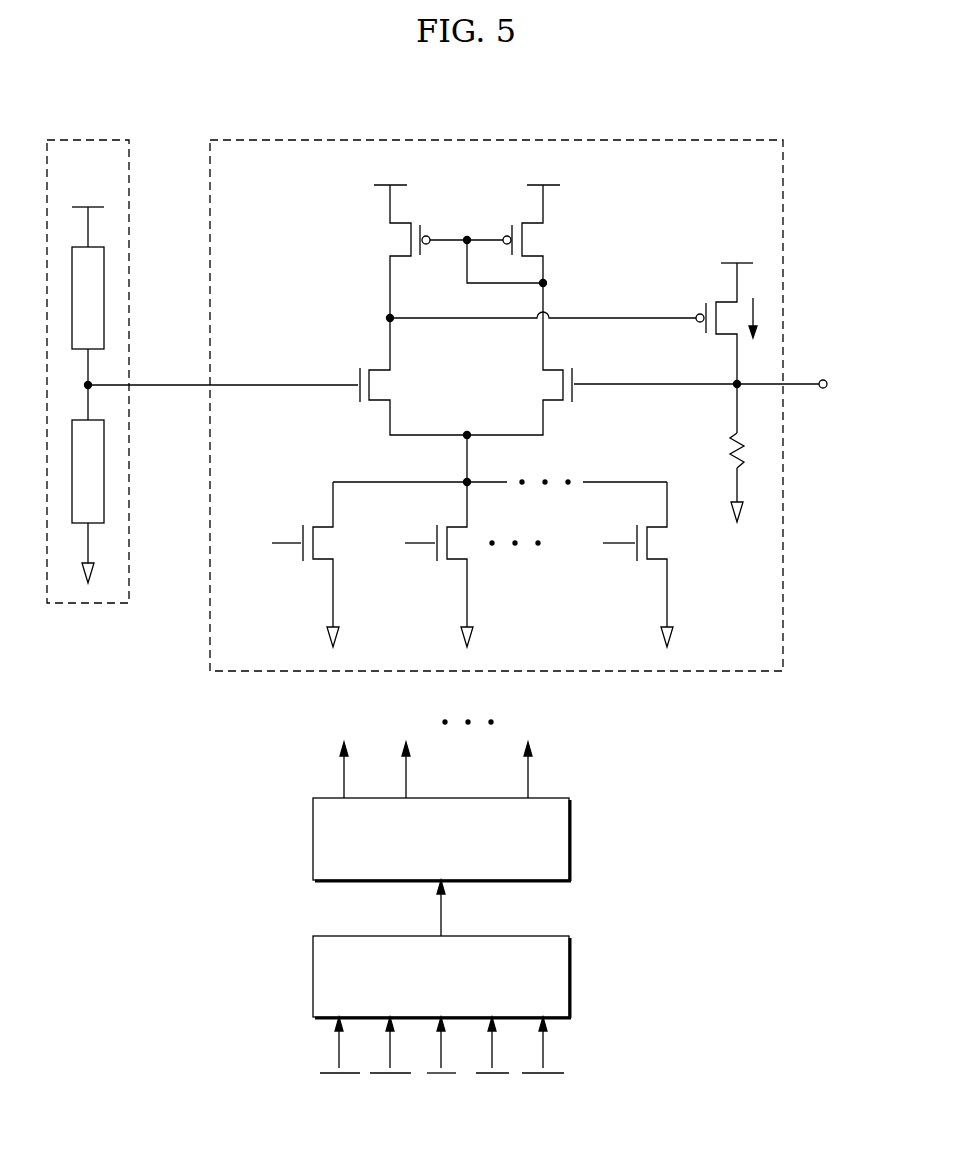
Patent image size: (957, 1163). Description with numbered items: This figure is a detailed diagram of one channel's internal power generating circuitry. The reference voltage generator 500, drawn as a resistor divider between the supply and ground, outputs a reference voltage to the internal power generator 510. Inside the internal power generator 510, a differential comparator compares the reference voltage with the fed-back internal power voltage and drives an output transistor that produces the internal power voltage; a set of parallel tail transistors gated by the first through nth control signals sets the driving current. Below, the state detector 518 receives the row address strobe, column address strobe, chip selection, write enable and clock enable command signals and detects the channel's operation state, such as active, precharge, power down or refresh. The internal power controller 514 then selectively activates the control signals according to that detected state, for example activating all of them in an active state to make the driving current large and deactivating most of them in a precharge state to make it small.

The reference voltage generator 500 is at (92, 140).
The internal power generator 510 is at (498, 139).
The internal power controller 514 is at (552, 797).
The state detector 518 is at (552, 935).